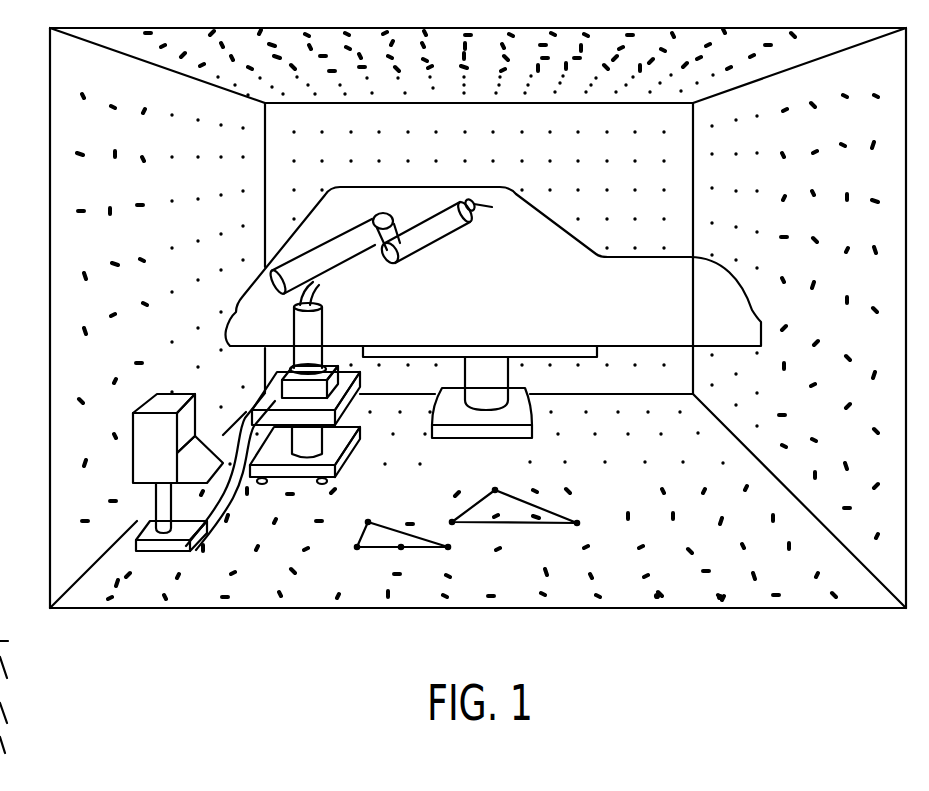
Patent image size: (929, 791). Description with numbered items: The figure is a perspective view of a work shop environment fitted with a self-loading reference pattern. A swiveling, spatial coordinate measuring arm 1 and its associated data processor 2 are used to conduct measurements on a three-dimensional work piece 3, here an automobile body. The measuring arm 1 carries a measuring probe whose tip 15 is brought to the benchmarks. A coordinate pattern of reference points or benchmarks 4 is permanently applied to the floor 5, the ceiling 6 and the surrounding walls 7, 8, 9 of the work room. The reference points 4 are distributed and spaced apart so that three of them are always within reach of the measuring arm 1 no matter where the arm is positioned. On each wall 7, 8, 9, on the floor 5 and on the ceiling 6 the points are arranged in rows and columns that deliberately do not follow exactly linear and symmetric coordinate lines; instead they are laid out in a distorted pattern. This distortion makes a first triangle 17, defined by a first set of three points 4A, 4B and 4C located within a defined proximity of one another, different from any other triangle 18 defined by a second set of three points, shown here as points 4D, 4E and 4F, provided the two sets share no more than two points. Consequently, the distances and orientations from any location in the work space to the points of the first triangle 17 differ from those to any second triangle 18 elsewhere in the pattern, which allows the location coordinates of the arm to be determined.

The spatial coordinate measuring arm 1 is at (381, 341).
The data processor 2 is at (173, 400).
The work piece 3 is at (583, 265).
The reference points 4 is at (657, 595).
The reference point 4A is at (357, 548).
The reference point 4B is at (369, 521).
The reference point 4C is at (449, 548).
The measuring mark 4D is at (496, 490).
The measuring mark 4E is at (451, 522).
The measuring mark 4F is at (578, 524).
The floor 5 is at (182, 602).
The ceiling 6 is at (517, 31).
The wall 7 is at (65, 320).
The wall 8 is at (578, 185).
The wall 9 is at (883, 253).
The tip of the arm measuring probe 15 is at (490, 208).
The first triangle 17 is at (387, 540).
The second triangle 18 is at (517, 518).